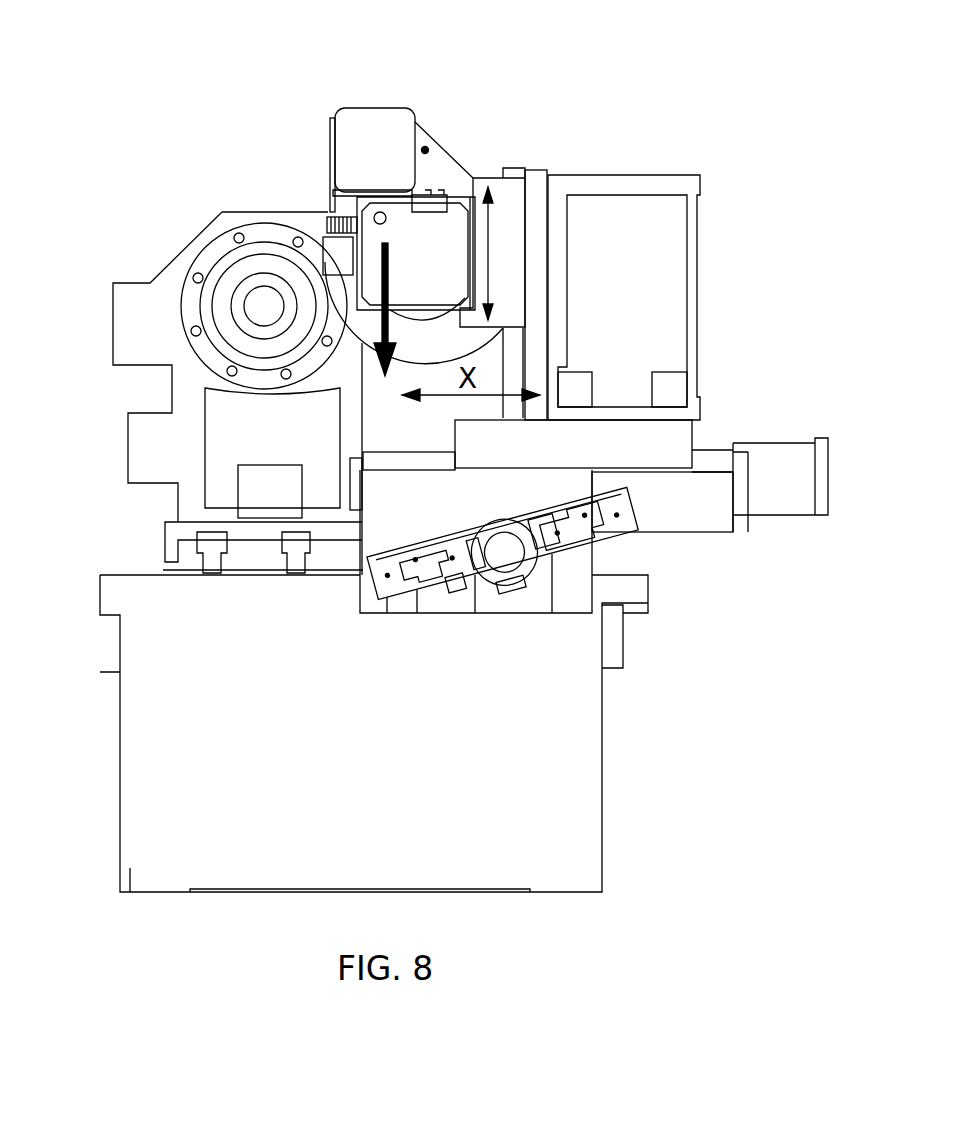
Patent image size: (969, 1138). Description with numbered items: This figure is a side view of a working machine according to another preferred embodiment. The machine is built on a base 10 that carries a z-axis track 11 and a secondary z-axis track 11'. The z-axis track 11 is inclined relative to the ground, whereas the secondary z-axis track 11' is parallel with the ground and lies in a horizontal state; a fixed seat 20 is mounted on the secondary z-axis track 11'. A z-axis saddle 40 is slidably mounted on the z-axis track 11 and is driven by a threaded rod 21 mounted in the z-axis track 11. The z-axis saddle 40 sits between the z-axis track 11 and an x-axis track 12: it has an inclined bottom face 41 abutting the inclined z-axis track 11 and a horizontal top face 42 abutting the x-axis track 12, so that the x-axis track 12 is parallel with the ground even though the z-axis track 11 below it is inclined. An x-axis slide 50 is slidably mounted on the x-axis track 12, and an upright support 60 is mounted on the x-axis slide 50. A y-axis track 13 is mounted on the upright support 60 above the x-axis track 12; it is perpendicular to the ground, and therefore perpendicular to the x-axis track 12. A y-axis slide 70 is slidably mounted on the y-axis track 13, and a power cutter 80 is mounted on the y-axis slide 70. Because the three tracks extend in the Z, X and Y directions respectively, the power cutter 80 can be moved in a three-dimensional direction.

The base 10 is at (580, 723).
The z-axis track 11 is at (504, 585).
The secondary z-axis track 11' is at (253, 583).
The x-axis track 12 is at (386, 452).
The y-axis track 13 is at (513, 170).
The fixed seat 20 is at (267, 217).
The threaded rod 21 is at (502, 545).
The z-axis saddle 40 is at (372, 497).
The inclined bottom face 41 is at (537, 505).
The horizontal top face 42 is at (415, 475).
The x-axis slide 50 is at (658, 433).
The upright support 60 is at (540, 213).
The y-axis slide 70 is at (503, 200).
The power cutter 80 is at (353, 143).